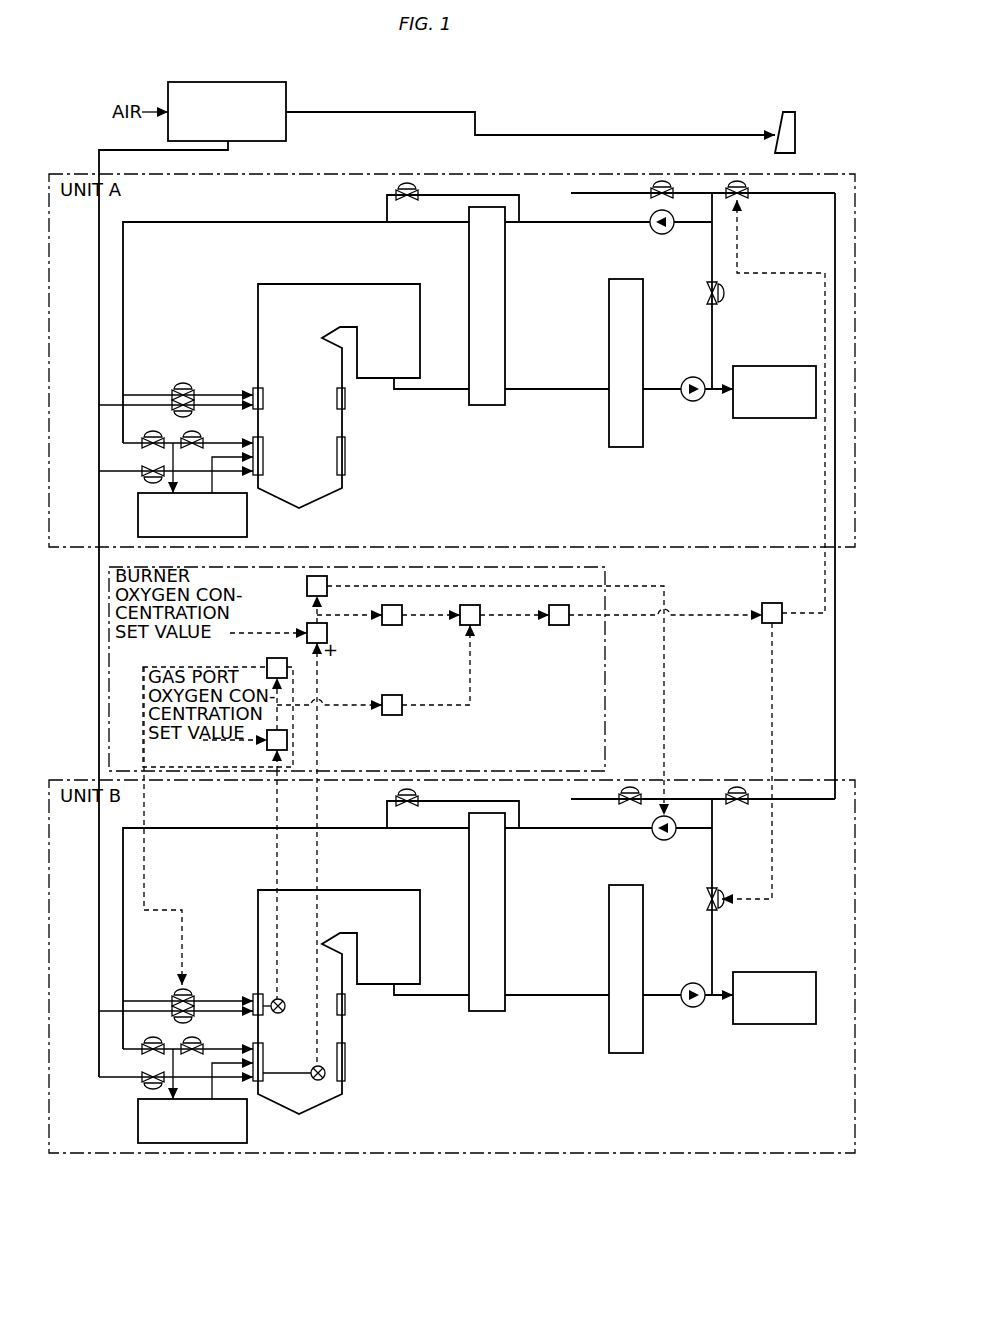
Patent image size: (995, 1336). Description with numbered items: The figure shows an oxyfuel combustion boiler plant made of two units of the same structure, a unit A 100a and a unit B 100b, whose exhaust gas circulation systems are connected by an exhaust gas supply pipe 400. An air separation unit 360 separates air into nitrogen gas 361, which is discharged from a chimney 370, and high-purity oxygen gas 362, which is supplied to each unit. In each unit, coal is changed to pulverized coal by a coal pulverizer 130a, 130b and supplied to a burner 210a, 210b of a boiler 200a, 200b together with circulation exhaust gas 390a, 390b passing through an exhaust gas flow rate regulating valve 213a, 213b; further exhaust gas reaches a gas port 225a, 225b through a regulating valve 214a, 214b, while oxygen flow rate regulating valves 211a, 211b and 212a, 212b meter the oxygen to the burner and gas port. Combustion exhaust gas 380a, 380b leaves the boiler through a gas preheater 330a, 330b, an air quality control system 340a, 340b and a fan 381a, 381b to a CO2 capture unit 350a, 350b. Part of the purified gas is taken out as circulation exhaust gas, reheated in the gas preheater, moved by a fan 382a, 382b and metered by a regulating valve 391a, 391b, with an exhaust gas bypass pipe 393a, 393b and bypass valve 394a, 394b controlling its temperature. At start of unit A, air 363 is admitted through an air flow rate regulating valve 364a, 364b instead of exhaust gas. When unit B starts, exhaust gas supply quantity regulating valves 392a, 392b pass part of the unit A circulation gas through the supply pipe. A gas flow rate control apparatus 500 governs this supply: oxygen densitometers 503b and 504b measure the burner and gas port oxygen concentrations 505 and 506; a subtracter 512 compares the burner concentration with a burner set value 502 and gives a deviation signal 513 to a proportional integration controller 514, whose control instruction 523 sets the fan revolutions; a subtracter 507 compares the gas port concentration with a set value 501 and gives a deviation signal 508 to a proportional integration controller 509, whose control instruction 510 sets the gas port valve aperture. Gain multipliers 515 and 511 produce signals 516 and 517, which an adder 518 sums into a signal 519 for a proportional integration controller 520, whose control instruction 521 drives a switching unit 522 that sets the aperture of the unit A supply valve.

The unit A 100a is at (72, 172).
The unit B 100b is at (447, 941).
The coal pulverizer 130a is at (248, 517).
The coal pulverizer 130b is at (231, 1121).
The boiler 200a is at (257, 302).
The boiler 200b is at (307, 988).
The burner 210a is at (346, 455).
The burner 210b is at (335, 1062).
The oxygen flow rate regulating valve 211a is at (150, 480).
The burner oxygen regulating valve 211b is at (151, 1096).
The oxygen flow rate regulating valve 212a is at (194, 413).
The gas port oxygen regulating valve 212b is at (176, 1023).
The exhaust gas flow rate regulating valve 213a is at (153, 437).
The exhaust gas flow rate regulating valve 213b is at (188, 1054).
The exhaust gas flow rate regulating valve 214a is at (183, 384).
The flow rate regulating valve 214b is at (188, 975).
The gas port 225a is at (346, 398).
The gas port 225b is at (335, 1011).
The gas preheater 330a is at (506, 300).
The gas preheater 330b is at (529, 912).
The air quality control system 340a is at (609, 342).
The air quality control system 340b is at (588, 969).
The CO2 capture unit 350a is at (760, 366).
The CO2 capture unit 350b is at (774, 972).
The air separation unit 360 is at (230, 82).
The nitrogen gas 361 is at (476, 125).
The oxygen gas 362 is at (99, 640).
The air 363 is at (605, 193).
The air flow rate regulating valve 364a is at (658, 186).
The air flow rate regulating valve 364b is at (625, 769).
The chimney 370 is at (776, 122).
The combustion exhaust gas 380a is at (562, 391).
The combustion exhaust gas 380b is at (563, 1017).
The fan 381a is at (697, 401).
The fan 381b is at (700, 1018).
The fan 382a is at (656, 233).
The fan 382b is at (640, 841).
The circulation exhaust gas 390a is at (205, 222).
The circulation exhaust gas 390b is at (417, 926).
The regulating valve for circulation exhaust gas flow rate 391a is at (709, 284).
The regulating valve for circulation exhaust gas flow rate 391b is at (695, 880).
The exhaust gas supply quantity regulating valve 392a is at (737, 186).
The exhaust gas supply quantity regulating valve 392b is at (735, 769).
The exhaust gas bypass pipe 393a is at (388, 210).
The exhaust gas bypass pipe 393b is at (428, 805).
The bypass exhaust gas flow rate regulating valve 394a is at (415, 195).
The bypass exhaust gas flow rate regulating valve 394b is at (441, 794).
The exhaust gas supply pipe 400 is at (835, 655).
The gas flow rate control apparatus 500 is at (606, 574).
The gas port oxygen concentration set value 501 is at (205, 740).
The burner oxygen concentration set value 502 is at (248, 634).
The oxygen densitometer 503b is at (294, 1088).
The oxygen densitometer 504b is at (289, 1024).
The burner oxygen concentration 505 is at (318, 855).
The gas port oxygen concentration 506 is at (277, 855).
The subtracter 507 is at (266, 745).
The deviation signal 508 is at (287, 733).
The proportional integration controller 509 is at (287, 668).
The control instruction 510 is at (144, 896).
The gain multiplier 511 is at (393, 716).
The subtracter 512 is at (327, 634).
The deviation signal 513 is at (310, 615).
The proportional integration controller 514 is at (307, 588).
The gain multiplier 515 is at (392, 626).
The signal 516 is at (430, 617).
The signal 517 is at (472, 706).
The adder 518 is at (478, 626).
The signal 519 is at (517, 617).
The proportional integration controller 520 is at (561, 626).
The control instruction 521 is at (705, 618).
The switching unit 522 is at (771, 602).
The control instruction 523 is at (664, 645).